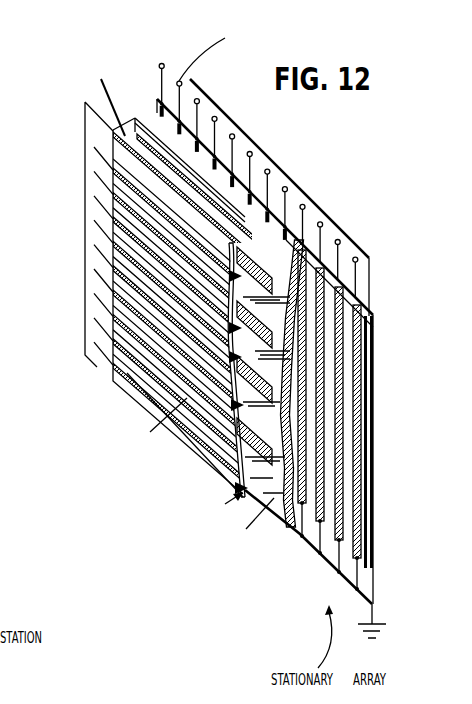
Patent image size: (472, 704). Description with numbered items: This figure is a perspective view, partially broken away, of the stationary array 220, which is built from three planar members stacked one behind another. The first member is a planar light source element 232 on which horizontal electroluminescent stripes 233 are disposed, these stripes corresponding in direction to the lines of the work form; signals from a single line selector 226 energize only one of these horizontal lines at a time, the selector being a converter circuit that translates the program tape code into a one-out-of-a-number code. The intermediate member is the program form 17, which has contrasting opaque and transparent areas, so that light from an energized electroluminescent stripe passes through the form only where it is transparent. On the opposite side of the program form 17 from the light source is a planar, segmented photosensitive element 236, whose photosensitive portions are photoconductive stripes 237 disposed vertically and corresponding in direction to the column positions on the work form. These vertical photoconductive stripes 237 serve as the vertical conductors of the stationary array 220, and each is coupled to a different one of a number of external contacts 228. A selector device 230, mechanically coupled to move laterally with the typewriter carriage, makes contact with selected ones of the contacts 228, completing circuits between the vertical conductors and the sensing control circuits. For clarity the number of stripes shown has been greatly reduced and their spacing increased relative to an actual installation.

The program form 17 is at (279, 565).
The stationary array 220 is at (384, 540).
The single line selector 226 is at (77, 233).
The external contacts 228 is at (160, 69).
The selector device 230 is at (276, 168).
The planar light source element 232 is at (222, 477).
The electroluminescent stripes 233 is at (117, 386).
The segmented photosensitive element 236 is at (348, 382).
The photoconductive stripes 237 is at (353, 351).